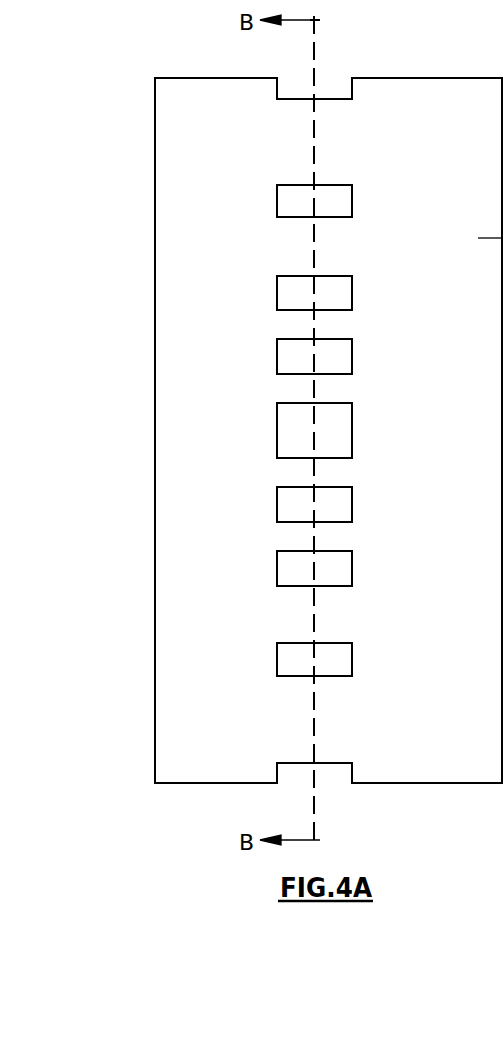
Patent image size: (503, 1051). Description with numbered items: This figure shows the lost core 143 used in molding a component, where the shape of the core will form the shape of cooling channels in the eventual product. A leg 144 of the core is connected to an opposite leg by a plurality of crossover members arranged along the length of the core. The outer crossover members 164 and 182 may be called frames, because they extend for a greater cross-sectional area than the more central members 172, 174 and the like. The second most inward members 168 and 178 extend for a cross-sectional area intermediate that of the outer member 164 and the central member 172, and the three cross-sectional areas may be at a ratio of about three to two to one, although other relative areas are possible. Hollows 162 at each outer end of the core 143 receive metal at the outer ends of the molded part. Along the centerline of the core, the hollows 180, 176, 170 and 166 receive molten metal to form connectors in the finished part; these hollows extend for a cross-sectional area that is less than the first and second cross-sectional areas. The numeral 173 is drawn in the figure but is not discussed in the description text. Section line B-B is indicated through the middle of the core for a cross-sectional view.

The lost core 143 is at (118, 185).
The leg 144 is at (182, 277).
The hollows 162 is at (335, 88).
The outer crossover member 164 is at (335, 143).
The hollow 166 is at (340, 200).
The second most inward member 168 is at (335, 242).
The hollow 170 is at (338, 295).
The central member 172 is at (335, 330).
The pad 173 is at (338, 500).
The central member 174 is at (340, 537).
The hollow 176 is at (338, 570).
The second most inward member 178 is at (340, 613).
The hollow 180 is at (338, 662).
The outer crossover member 182 is at (317, 730).